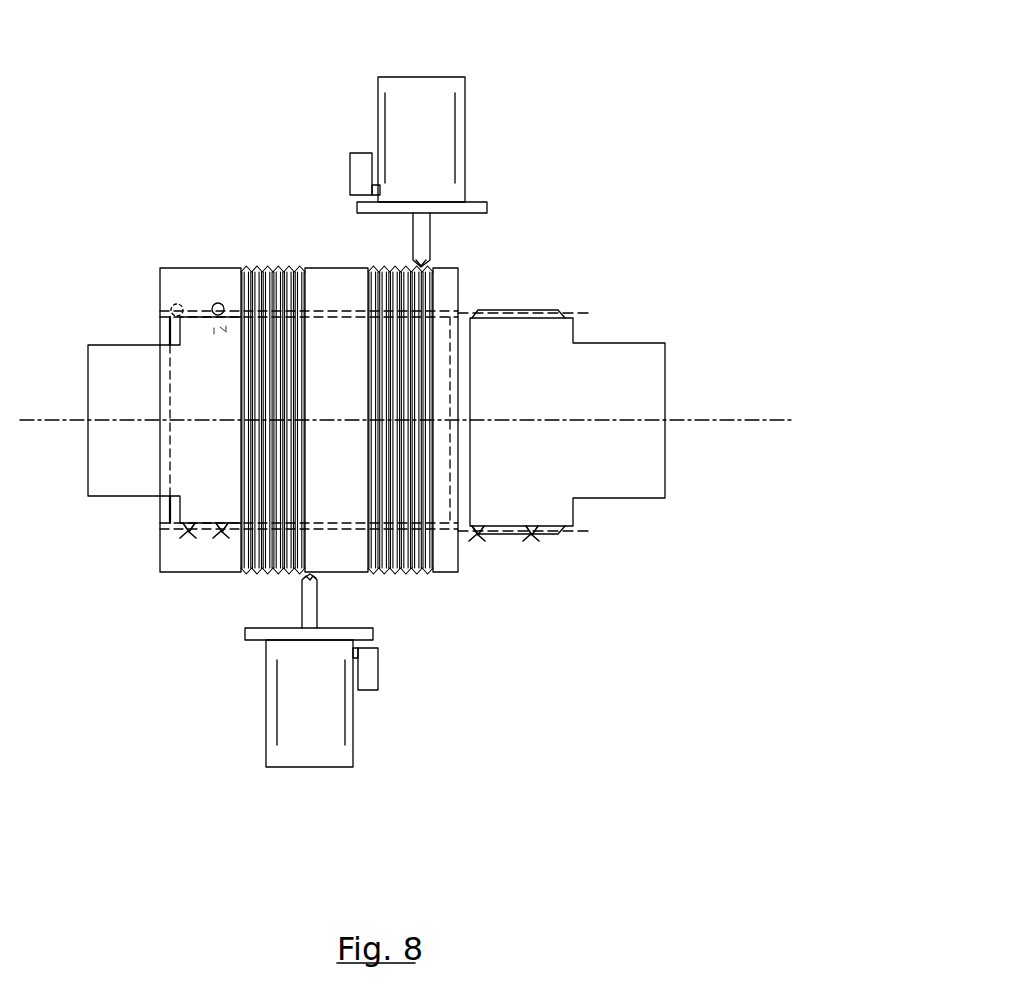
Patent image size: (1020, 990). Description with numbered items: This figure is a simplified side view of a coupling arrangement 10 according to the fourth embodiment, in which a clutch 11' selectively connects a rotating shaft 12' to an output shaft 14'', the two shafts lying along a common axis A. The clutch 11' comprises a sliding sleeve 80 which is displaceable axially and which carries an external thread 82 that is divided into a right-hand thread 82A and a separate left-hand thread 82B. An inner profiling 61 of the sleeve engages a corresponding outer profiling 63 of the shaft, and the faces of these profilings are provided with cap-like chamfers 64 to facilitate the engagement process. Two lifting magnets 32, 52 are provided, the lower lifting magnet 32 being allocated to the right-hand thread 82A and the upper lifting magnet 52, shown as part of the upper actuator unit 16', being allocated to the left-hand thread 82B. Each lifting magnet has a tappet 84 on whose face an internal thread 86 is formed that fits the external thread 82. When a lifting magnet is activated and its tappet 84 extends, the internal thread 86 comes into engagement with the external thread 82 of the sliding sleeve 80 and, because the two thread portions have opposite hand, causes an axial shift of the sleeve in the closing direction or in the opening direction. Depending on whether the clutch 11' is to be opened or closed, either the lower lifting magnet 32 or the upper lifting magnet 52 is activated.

The coupling device 10 is at (110, 127).
The rotation axis A is at (48, 424).
The clutch 11' is at (448, 653).
The rotating shaft 12' is at (109, 480).
The output shaft 14'' is at (577, 381).
The actuator unit 16' is at (468, 190).
The lifting magnet 32 is at (330, 722).
The lifting magnet 52 is at (440, 147).
The inner profiling 61 is at (335, 309).
The outer profiling 63 is at (221, 534).
The cap-like chamfers 64 is at (189, 534).
The sliding sleeve 80 is at (205, 285).
The external thread 82 is at (348, 485).
The right-hand thread 82A is at (275, 572).
The left-hand thread 82B is at (407, 572).
The tappet 84 is at (421, 232).
The internal thread 86 is at (423, 262).